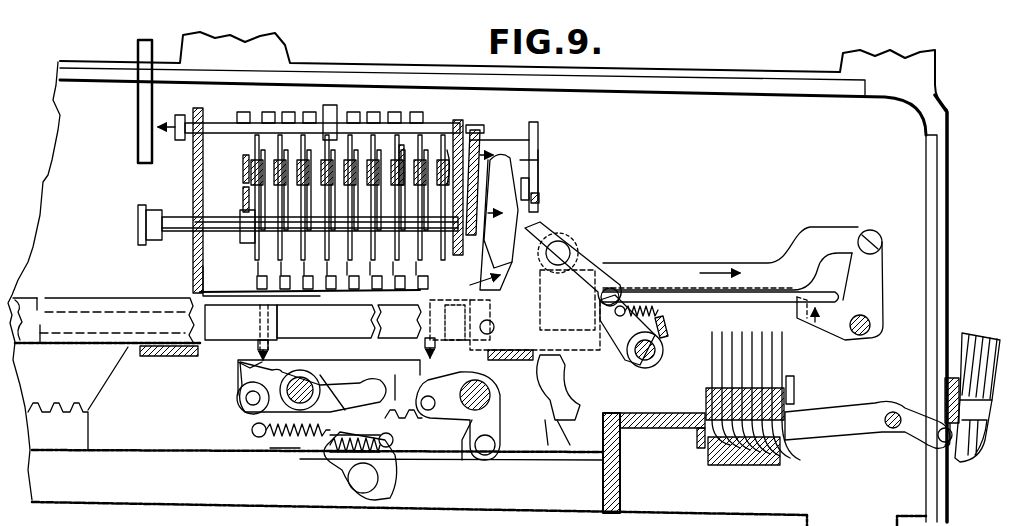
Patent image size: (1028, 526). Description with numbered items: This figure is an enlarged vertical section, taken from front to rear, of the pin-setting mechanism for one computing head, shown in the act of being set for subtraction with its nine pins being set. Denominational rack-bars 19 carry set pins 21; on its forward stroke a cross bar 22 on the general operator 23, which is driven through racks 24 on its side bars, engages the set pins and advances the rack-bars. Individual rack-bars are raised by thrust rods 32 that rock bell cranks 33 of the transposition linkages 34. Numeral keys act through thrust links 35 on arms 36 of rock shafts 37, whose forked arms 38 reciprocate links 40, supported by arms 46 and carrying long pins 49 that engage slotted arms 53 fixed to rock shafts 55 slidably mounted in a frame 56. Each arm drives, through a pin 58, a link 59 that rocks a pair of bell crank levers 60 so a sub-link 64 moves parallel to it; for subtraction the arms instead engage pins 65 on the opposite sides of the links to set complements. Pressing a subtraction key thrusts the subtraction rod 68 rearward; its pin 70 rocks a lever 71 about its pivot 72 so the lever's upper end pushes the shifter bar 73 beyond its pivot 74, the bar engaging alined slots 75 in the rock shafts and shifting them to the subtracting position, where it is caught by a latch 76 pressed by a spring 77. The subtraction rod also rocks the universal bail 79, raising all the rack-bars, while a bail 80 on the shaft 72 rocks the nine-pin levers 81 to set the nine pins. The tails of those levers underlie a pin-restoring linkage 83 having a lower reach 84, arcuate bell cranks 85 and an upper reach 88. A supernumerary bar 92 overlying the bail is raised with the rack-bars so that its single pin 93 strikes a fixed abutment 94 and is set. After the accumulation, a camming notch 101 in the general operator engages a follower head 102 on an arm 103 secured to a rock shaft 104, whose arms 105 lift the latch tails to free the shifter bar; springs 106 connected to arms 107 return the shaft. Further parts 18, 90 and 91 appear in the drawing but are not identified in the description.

The pivoted lever 18 is at (872, 285).
The rack-bars 19 is at (396, 330).
The set pins 21 is at (327, 283).
The cross bar 22 is at (519, 360).
The general operator 23 is at (477, 279).
The racks 24 is at (42, 408).
The thrust rods 32 is at (966, 335).
The bell cranks 33 is at (826, 412).
The transposition linkages 34 is at (775, 376).
The thrust link 35 is at (140, 107).
The arm 36 is at (140, 222).
The rock shaft 37 is at (178, 215).
The forked arms 38 is at (245, 233).
The links 40 is at (262, 150).
The arm 46 is at (372, 155).
The long pins 49 is at (245, 165).
The arms 53 is at (312, 113).
The rock shafts 55 is at (433, 124).
The frame 56 is at (203, 122).
The pin 58 is at (243, 195).
The link 59 is at (440, 160).
The bell crank levers 60 is at (370, 248).
The sub-link 64 is at (282, 255).
The pins 65 is at (402, 185).
The subtraction rod 68 is at (60, 300).
The pin 70 is at (495, 326).
The lever 71 is at (512, 343).
The pivot shaft 72 is at (505, 284).
The shifter bar 73 is at (480, 140).
The pivot 74 is at (500, 211).
The alined slots 75 is at (472, 132).
The latch 76 is at (540, 242).
The spring 77 is at (580, 246).
The universal bail 79 is at (828, 330).
The bail 80 is at (448, 272).
The nine-pin levers 81 is at (452, 317).
The pin-restoring linkage 83 is at (540, 188).
The lower reach 84 is at (567, 300).
The arcuate bell cranks 85 is at (527, 162).
The upper reach 88 is at (528, 178).
The plate 90 is at (538, 120).
The stud 91 is at (539, 196).
The supernumerary bar 92 is at (240, 328).
The pin 93 is at (268, 350).
The fixed abutment 94 is at (232, 290).
The camming notch 101 is at (546, 420).
The follower head 102 is at (560, 422).
The arm 103 is at (565, 372).
The rock shaft 104 is at (663, 352).
The arm 105 is at (622, 358).
The springs 106 is at (658, 312).
The arms 107 is at (664, 330).